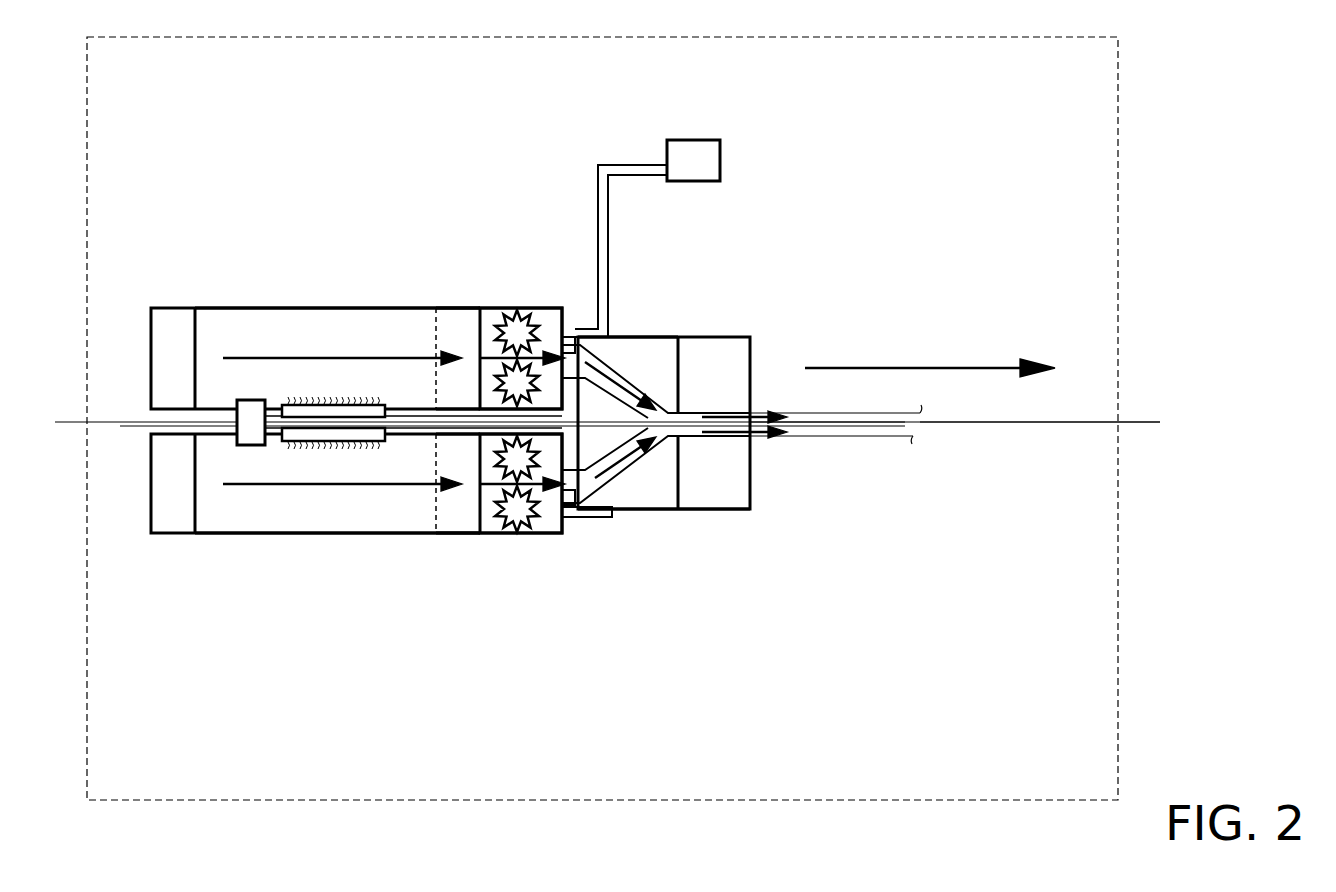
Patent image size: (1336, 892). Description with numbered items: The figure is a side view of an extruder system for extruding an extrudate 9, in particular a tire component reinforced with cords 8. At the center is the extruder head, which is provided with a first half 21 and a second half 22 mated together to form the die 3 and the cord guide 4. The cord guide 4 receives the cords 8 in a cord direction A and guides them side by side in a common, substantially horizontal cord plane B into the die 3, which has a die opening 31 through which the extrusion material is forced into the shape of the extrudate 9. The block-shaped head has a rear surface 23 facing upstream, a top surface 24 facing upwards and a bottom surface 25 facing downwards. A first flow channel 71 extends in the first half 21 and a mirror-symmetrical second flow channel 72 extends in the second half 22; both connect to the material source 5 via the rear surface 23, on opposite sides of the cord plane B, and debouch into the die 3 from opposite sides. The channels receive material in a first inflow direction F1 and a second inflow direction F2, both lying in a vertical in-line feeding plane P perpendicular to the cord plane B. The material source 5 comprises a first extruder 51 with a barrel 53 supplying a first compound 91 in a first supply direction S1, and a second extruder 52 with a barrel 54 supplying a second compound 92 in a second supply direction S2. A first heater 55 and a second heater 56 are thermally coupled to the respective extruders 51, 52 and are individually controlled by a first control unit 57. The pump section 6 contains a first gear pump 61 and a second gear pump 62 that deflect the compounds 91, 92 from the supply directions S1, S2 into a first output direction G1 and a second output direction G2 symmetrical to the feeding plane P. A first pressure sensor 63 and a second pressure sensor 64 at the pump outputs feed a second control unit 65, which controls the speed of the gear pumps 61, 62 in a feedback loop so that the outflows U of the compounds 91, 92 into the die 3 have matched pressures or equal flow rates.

The cords 8 is at (62, 421).
The material source 5 is at (297, 425).
The first extruder 51 is at (262, 322).
The second extruder 52 is at (232, 512).
The barrel 53 is at (367, 315).
The barrel 54 is at (365, 535).
The first heater 55 is at (302, 403).
The second heater 56 is at (293, 452).
The first control unit 57 is at (253, 406).
The first compound 91 is at (400, 322).
The second compound 92 is at (413, 515).
The first output direction G1 is at (481, 306).
The second output direction G2 is at (528, 524).
The first gear pump 61 is at (520, 312).
The pump section 6 is at (480, 388).
The second gear pump 62 is at (547, 537).
The first pressure sensor 63 is at (585, 323).
The second pressure sensor 64 is at (573, 518).
The second control unit 65 is at (718, 162).
The cord guide 4 is at (572, 338).
The rear surface 23 is at (575, 513).
The die 3 is at (742, 417).
The first half 21 is at (762, 337).
The second half 22 is at (743, 489).
The top surface 24 is at (701, 336).
The bottom surface 25 is at (727, 511).
The first flow channel 71 is at (608, 345).
The second flow channel 72 is at (640, 495).
The die opening 31 is at (750, 411).
The extrudate 9 is at (862, 438).
The first supply direction S1 is at (394, 348).
The second supply direction S2 is at (394, 494).
The first inflow direction F1 is at (630, 338).
The second inflow direction F2 is at (652, 510).
The outflows U is at (745, 437).
The cord direction A is at (930, 356).
The cord plane B is at (1017, 425).
The feeding plane P is at (1050, 121).